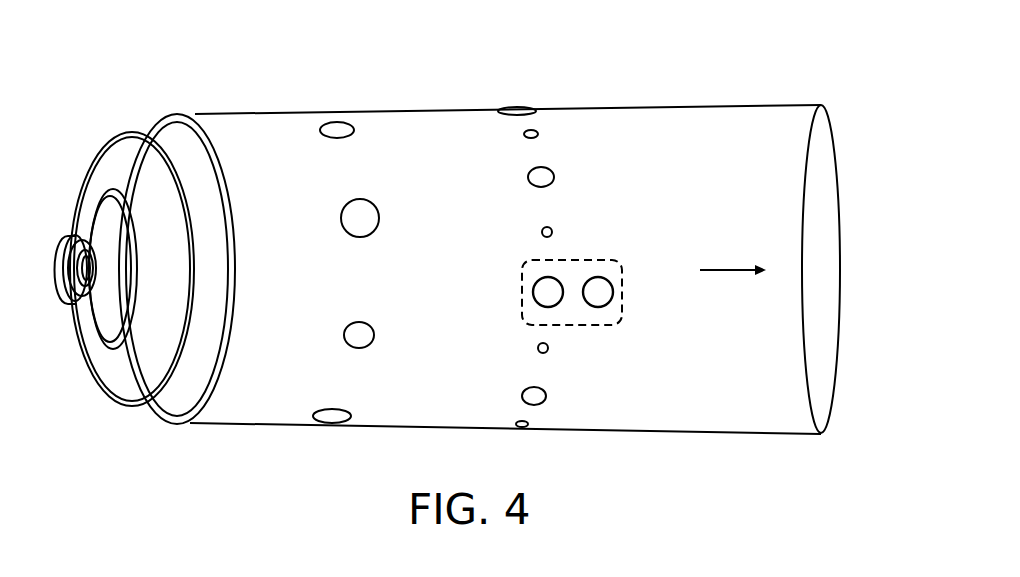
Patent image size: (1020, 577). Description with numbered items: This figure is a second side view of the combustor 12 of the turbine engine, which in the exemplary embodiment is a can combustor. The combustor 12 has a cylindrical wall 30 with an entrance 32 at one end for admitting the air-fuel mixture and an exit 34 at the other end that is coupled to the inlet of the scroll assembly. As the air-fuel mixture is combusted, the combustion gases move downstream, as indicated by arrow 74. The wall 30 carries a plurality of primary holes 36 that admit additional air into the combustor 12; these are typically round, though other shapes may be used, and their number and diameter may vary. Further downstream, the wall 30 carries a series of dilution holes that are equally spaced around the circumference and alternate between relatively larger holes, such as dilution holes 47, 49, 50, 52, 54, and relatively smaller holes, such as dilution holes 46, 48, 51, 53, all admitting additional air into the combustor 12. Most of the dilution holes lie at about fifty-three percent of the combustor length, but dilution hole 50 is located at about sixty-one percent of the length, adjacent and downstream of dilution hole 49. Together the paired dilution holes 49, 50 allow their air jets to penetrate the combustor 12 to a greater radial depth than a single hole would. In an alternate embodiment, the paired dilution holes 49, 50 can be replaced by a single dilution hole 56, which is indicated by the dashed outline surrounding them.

The combustor 12 is at (347, 104).
The cylindrical wall 30 is at (708, 115).
The entrance 32 is at (77, 233).
The exit 34 is at (832, 194).
The primary holes 36 is at (330, 203).
The dilution hole 46 is at (517, 422).
The dilution hole 47 is at (547, 392).
The dilution hole 48 is at (537, 347).
The dilution hole 49 is at (532, 292).
The dilution hole 50 is at (598, 277).
The dilution hole 51 is at (541, 233).
The dilution hole 52 is at (527, 178).
The dilution hole 53 is at (524, 135).
The dilution hole 54 is at (519, 110).
The single dilution hole 56 is at (620, 310).
The arrow 74 is at (722, 269).